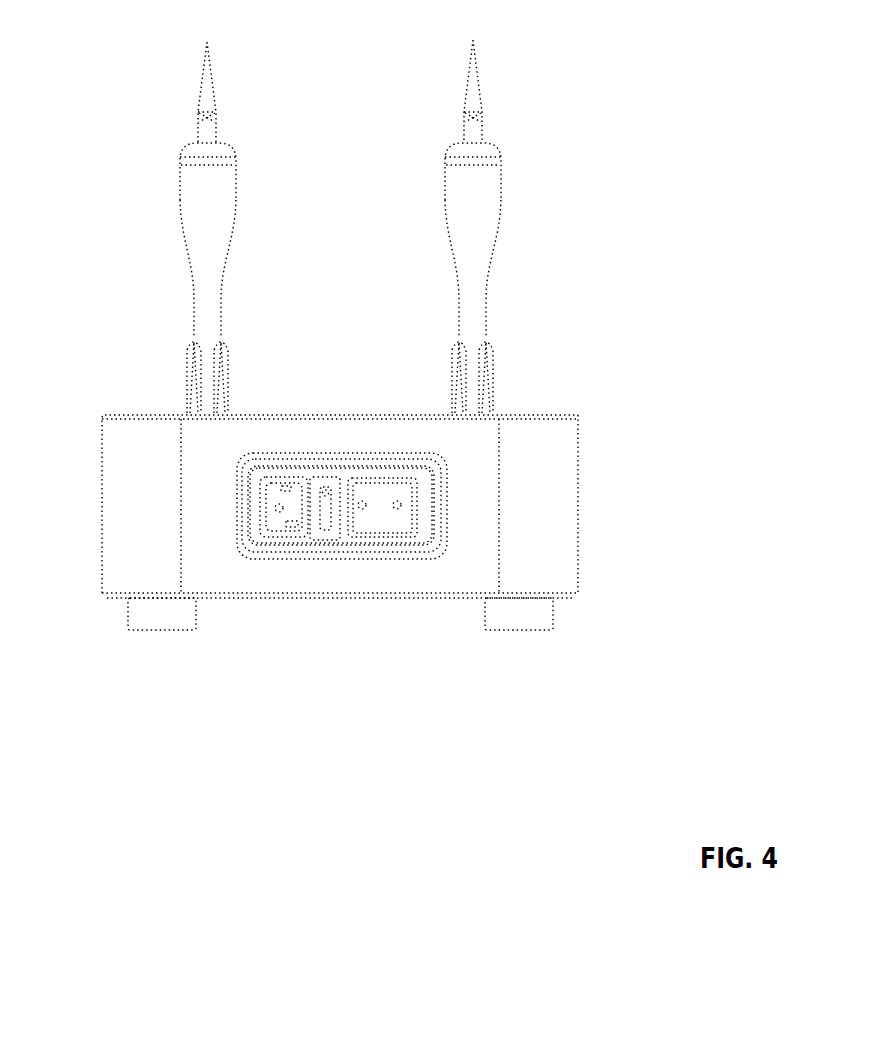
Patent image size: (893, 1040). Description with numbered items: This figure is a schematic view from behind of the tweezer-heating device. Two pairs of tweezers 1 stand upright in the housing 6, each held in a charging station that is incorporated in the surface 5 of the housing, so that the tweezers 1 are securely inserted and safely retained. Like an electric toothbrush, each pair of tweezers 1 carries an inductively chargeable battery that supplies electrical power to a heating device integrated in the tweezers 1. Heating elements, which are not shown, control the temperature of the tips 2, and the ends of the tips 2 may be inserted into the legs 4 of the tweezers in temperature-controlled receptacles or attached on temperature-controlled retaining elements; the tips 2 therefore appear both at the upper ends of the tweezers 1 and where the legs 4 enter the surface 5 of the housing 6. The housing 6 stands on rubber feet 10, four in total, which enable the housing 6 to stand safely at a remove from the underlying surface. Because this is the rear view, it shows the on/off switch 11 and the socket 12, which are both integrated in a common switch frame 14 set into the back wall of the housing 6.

The tweezers 1 is at (235, 197).
The tips 2 is at (213, 93).
The legs 4 is at (222, 292).
The surface 5 is at (352, 413).
The housing 6 is at (578, 506).
The rubber feet 10 is at (157, 632).
The on/off switch 11 is at (379, 520).
The socket 12 is at (280, 509).
The switch frame 14 is at (332, 553).